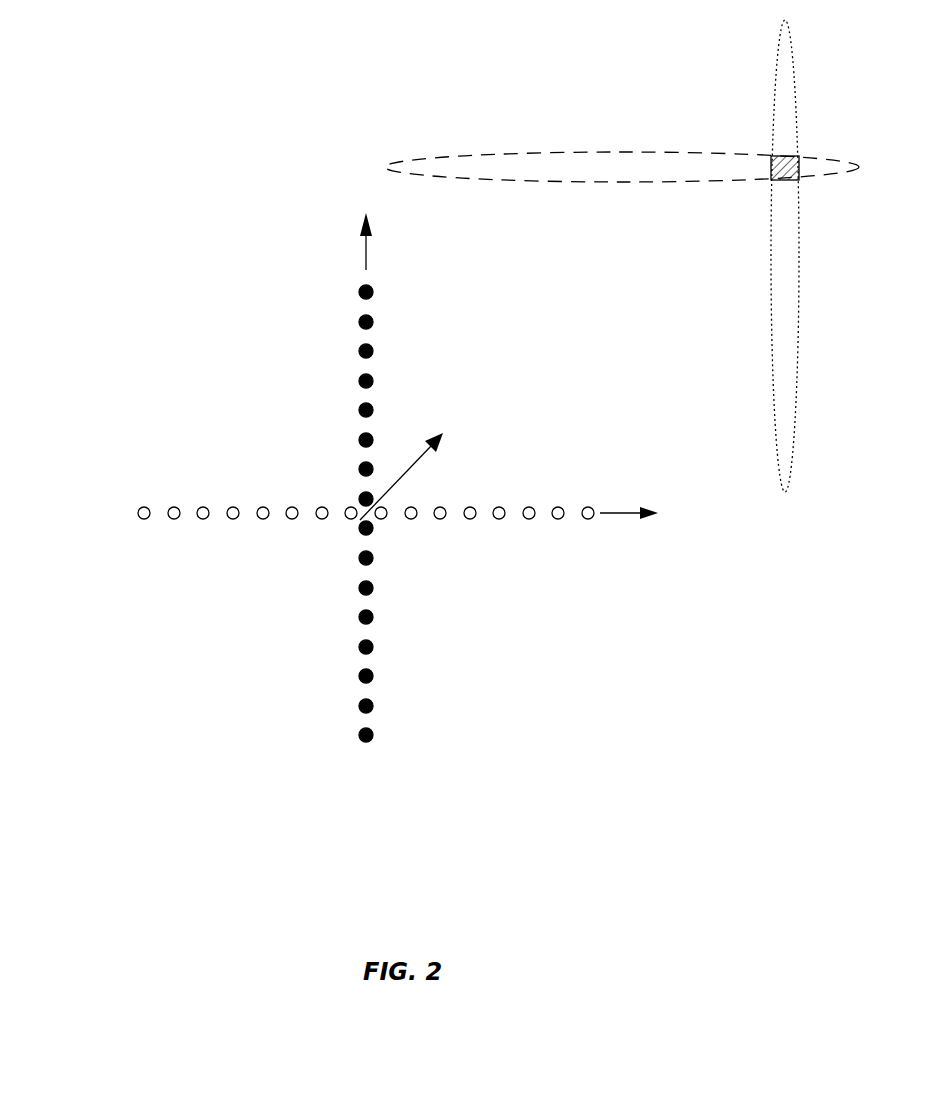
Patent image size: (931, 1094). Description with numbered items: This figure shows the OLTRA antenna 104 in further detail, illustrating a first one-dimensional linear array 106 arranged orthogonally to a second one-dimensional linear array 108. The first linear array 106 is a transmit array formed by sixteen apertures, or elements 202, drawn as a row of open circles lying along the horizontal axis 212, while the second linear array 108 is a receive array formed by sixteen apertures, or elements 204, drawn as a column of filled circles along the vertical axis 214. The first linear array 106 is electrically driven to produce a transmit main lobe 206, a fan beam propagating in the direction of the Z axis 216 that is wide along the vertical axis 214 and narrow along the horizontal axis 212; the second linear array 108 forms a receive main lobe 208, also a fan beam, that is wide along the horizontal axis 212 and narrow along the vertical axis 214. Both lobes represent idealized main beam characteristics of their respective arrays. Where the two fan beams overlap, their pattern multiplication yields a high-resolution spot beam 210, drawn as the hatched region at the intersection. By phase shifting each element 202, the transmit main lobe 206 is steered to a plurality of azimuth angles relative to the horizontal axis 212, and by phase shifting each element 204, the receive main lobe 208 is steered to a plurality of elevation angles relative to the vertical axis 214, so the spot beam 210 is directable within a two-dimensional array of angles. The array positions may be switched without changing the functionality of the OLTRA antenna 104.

The OLTRA antenna 104 is at (212, 110).
The first 1D linear array 106 is at (95, 532).
The second 1D linear array 108 is at (345, 780).
The apertures (elements) 202 is at (292, 519).
The apertures (elements) 204 is at (359, 588).
The transmit main lobe 206 is at (798, 357).
The receive main lobe 208 is at (470, 155).
The spot beam 210 is at (771, 156).
The horizontal axis 212 is at (618, 515).
The vertical axis 214 is at (365, 257).
The Z axis 216 is at (383, 493).